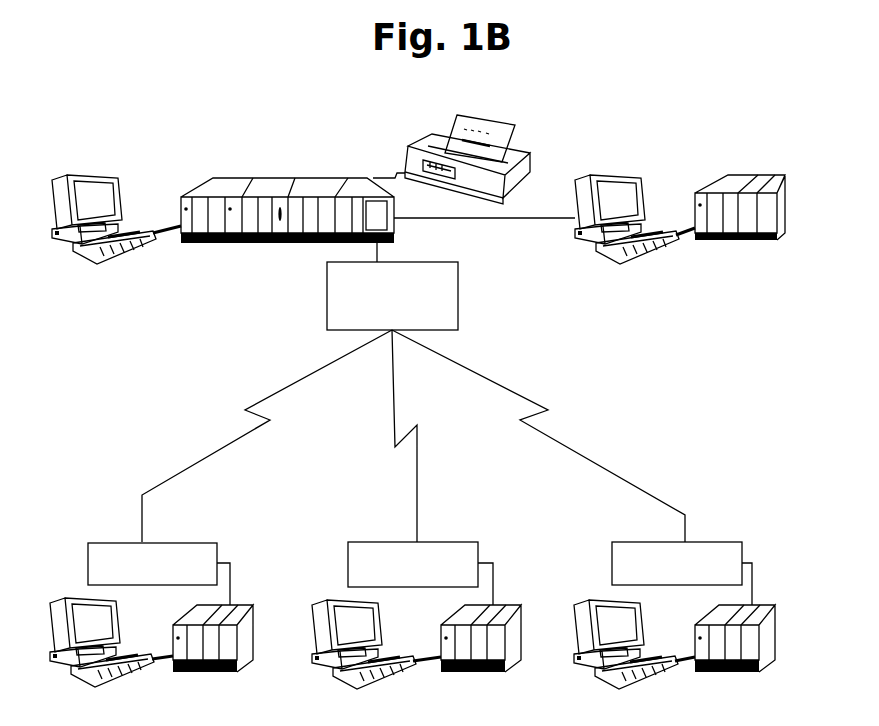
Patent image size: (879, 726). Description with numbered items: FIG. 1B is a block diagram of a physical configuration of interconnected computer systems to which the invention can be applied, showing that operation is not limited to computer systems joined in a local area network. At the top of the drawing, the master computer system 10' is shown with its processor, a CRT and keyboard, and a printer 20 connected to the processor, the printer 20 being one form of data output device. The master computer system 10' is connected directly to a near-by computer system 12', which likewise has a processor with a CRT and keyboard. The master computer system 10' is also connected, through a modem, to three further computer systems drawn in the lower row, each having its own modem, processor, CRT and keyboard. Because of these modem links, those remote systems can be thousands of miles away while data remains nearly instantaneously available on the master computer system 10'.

The master computer system 10' is at (223, 206).
The near-by computer system 12' is at (674, 213).
The printer 20 is at (530, 155).